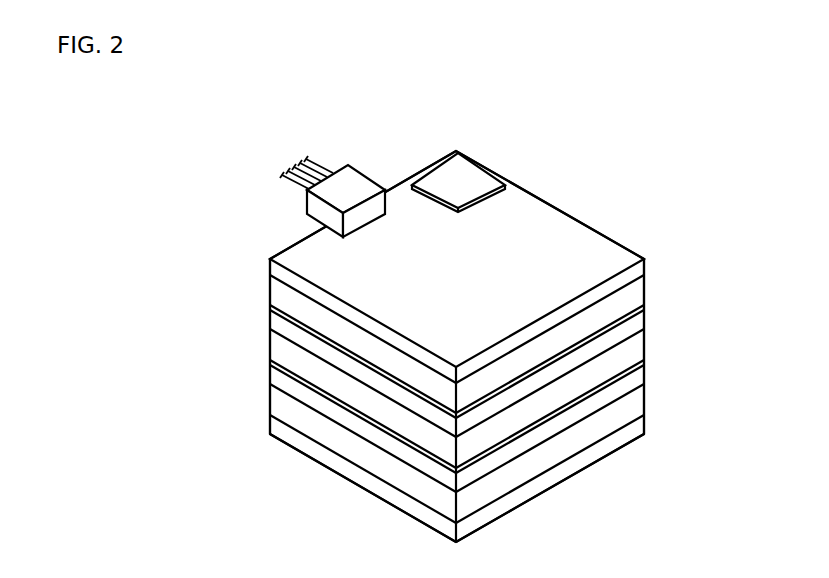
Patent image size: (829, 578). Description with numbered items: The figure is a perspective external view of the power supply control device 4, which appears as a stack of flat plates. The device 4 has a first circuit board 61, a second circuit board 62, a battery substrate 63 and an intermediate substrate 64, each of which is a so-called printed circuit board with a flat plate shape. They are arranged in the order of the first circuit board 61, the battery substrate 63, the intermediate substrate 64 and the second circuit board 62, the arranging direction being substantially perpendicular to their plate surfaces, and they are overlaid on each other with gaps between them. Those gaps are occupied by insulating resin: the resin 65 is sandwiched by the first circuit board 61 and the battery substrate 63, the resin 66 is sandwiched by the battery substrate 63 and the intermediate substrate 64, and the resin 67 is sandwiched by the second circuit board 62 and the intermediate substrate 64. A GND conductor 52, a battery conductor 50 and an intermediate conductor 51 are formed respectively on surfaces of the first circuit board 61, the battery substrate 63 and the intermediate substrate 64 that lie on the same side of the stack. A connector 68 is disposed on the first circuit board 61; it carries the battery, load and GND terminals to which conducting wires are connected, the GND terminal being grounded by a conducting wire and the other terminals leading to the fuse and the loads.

The power supply control device 4 is at (738, 72).
The battery conductor 50 is at (646, 312).
The intermediate conductor 51 is at (646, 368).
The GND conductor 52 is at (458, 168).
The first circuit board 61 is at (646, 266).
The second circuit board 62 is at (646, 425).
The battery substrate 63 is at (646, 322).
The intermediate substrate 64 is at (646, 375).
The insulating resin 65 is at (279, 298).
The insulating resin 66 is at (279, 352).
The insulating resin 67 is at (279, 405).
The connector 68 is at (365, 182).